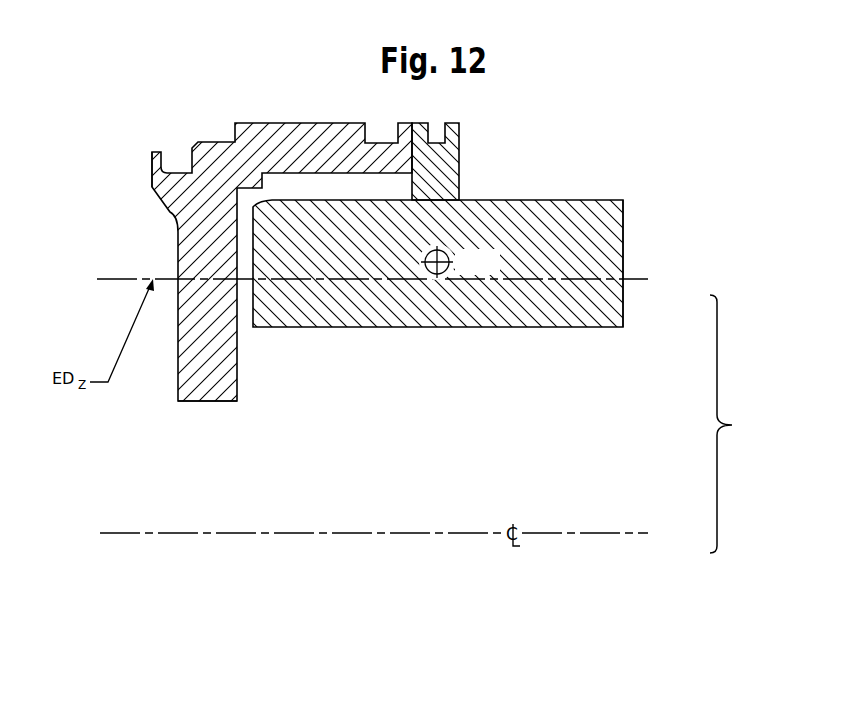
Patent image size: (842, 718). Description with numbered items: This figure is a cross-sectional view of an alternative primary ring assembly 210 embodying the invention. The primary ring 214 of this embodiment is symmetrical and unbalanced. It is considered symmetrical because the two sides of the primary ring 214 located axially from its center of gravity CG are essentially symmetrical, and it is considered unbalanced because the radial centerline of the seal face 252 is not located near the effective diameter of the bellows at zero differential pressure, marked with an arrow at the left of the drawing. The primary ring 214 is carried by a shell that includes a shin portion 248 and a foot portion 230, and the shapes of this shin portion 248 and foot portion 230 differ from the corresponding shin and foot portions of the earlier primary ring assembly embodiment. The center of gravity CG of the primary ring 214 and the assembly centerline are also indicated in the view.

The primary ring assembly 210 is at (495, 110).
The primary ring 214 is at (584, 200).
The foot portion 230 is at (378, 260).
The shin portion 248 is at (452, 153).
The seal face 252 is at (623, 231).